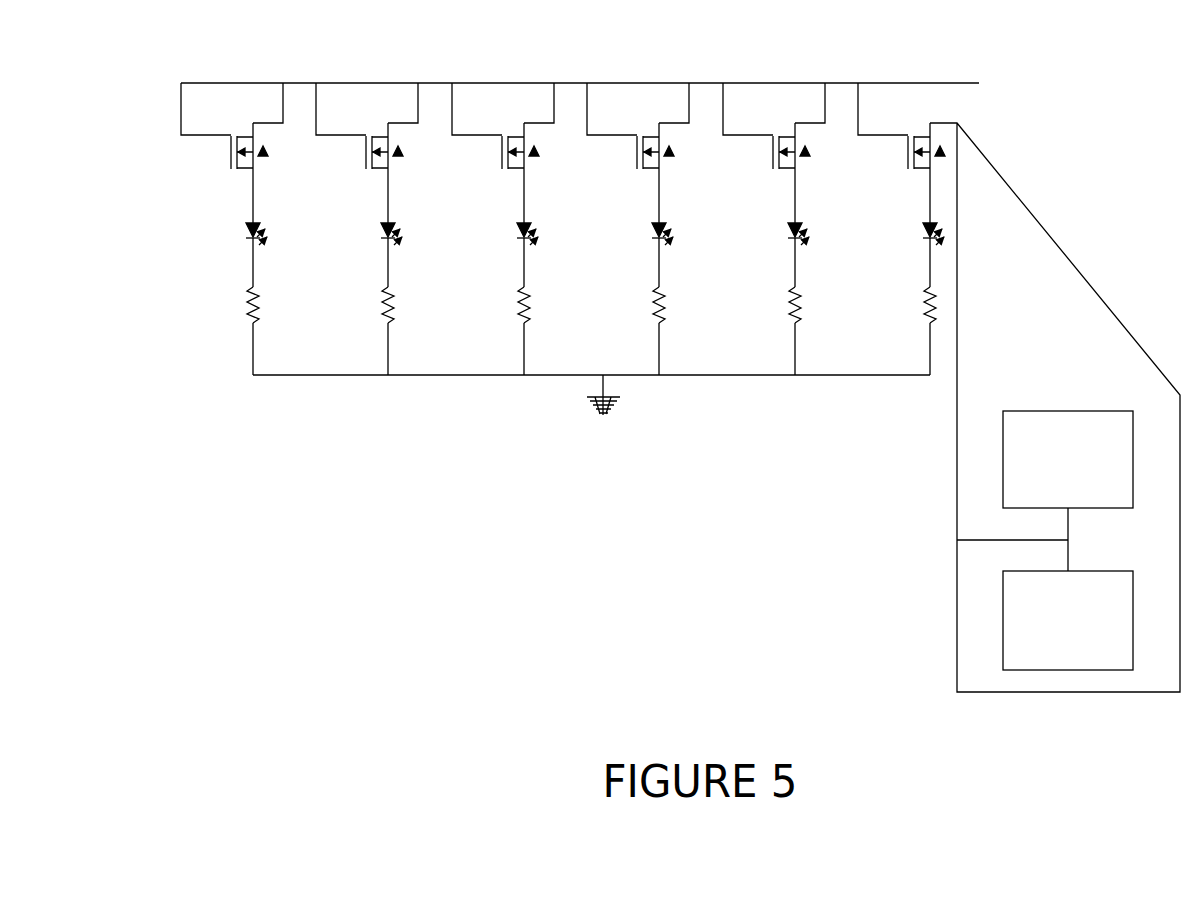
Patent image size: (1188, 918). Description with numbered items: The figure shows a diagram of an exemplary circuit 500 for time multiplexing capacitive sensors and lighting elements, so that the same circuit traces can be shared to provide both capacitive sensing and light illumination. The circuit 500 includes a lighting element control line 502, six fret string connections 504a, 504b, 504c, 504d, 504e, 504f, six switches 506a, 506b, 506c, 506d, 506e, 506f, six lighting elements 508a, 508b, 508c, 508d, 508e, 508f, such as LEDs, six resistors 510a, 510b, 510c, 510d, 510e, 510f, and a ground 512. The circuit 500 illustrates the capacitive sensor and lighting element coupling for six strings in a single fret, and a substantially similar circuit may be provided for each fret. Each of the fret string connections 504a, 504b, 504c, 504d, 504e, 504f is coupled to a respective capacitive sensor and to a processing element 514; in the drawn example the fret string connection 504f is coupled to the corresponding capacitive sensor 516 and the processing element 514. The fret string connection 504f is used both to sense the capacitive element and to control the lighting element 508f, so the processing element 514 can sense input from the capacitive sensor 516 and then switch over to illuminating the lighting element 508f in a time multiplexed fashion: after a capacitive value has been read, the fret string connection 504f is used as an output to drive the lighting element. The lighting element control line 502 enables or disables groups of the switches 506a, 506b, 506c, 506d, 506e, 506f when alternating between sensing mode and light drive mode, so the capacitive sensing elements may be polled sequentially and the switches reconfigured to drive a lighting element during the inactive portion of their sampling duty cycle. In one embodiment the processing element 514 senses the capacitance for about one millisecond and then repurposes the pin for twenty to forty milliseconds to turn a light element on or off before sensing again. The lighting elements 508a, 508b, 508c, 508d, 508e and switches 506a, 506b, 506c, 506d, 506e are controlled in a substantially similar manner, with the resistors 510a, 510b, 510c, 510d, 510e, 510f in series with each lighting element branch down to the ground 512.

The circuit 500 is at (138, 43).
The lighting element control line 502 is at (988, 83).
The fret string connection 504a is at (277, 116).
The fret string connection 504b is at (367, 229).
The fret string connection 504c is at (503, 229).
The fret string connection 504d is at (638, 229).
The fret string connection 504e is at (774, 229).
The fret string connection 504f is at (905, 229).
The switch 506a is at (271, 157).
The switch 506b is at (409, 165).
The switch 506c is at (545, 165).
The switch 506d is at (680, 165).
The switch 506e is at (816, 165).
The switch 506f is at (911, 168).
The lighting element 508a is at (276, 228).
The lighting element 508b is at (421, 246).
The lighting element 508c is at (557, 246).
The lighting element 508d is at (692, 246).
The lighting element 508e is at (828, 246).
The lighting element 508f is at (912, 253).
The resistor 510a is at (266, 305).
The resistor 510b is at (417, 314).
The resistor 510c is at (553, 314).
The resistor 510d is at (688, 314).
The resistor 510e is at (824, 314).
The resistor 510f is at (909, 321).
The ground 512 is at (630, 402).
The processing element 514 is at (1082, 500).
The capacitive sensor 516 is at (1082, 660).